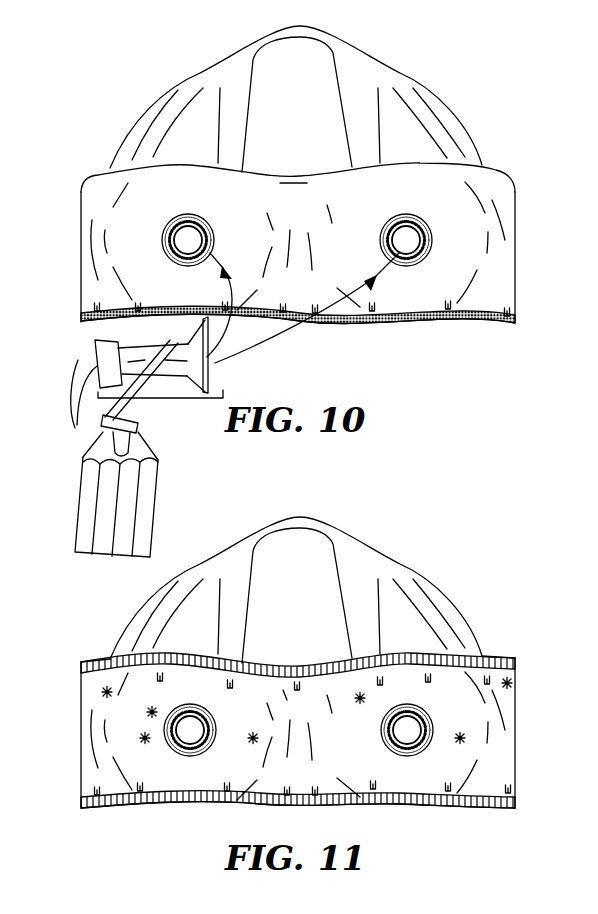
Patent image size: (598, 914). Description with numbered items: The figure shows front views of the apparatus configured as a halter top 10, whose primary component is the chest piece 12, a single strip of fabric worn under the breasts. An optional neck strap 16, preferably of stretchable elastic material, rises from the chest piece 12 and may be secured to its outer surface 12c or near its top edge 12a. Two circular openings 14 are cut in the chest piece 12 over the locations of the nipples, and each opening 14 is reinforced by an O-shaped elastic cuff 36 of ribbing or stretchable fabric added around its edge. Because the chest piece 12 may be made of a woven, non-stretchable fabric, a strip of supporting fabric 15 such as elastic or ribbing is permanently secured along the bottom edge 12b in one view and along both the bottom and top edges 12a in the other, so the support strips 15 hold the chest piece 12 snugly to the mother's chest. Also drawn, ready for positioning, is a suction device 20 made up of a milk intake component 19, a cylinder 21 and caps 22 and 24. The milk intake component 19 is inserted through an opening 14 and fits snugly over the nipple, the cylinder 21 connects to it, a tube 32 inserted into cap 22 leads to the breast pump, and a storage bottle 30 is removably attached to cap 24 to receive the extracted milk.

In FIG. 10, the halter top 10 is at (166, 71).
In FIG. 11, the halter top 10 is at (505, 596).
In FIG. 10, the chest piece 12 is at (522, 203).
In FIG. 11, the chest piece 12 is at (526, 744).
In FIG. 10, the top edge 12a is at (497, 167).
In FIG. 11, the top edge 12a is at (482, 657).
In FIG. 10, the bottom edge 12b is at (503, 307).
In FIG. 11, the bottom edge 12b is at (402, 797).
In FIG. 10, the outer surface 12c is at (287, 183).
In FIG. 11, the outer surface 12c is at (283, 690).
In FIG. 10, the opening 14 is at (190, 242).
In FIG. 11, the opening 14 is at (190, 732).
In FIG. 10, the support strip 15 is at (413, 315).
In FIG. 11, the support strip 15 is at (514, 658).
In FIG. 10, the neck strap 16 is at (387, 72).
In FIG. 11, the neck strap 16 is at (407, 580).
In FIG. 10, the milk intake component 19 is at (208, 388).
In FIG. 10, the suction device 20 is at (160, 398).
In FIG. 10, the cylinder 21 is at (163, 362).
In FIG. 10, the cap 22 is at (112, 342).
In FIG. 10, the cap 24 is at (138, 426).
In FIG. 10, the storage bottle 30 is at (152, 495).
In FIG. 10, the tube 32 is at (79, 362).
In FIG. 10, the cuff 36 is at (192, 258).
In FIG. 11, the cuff 36 is at (190, 755).